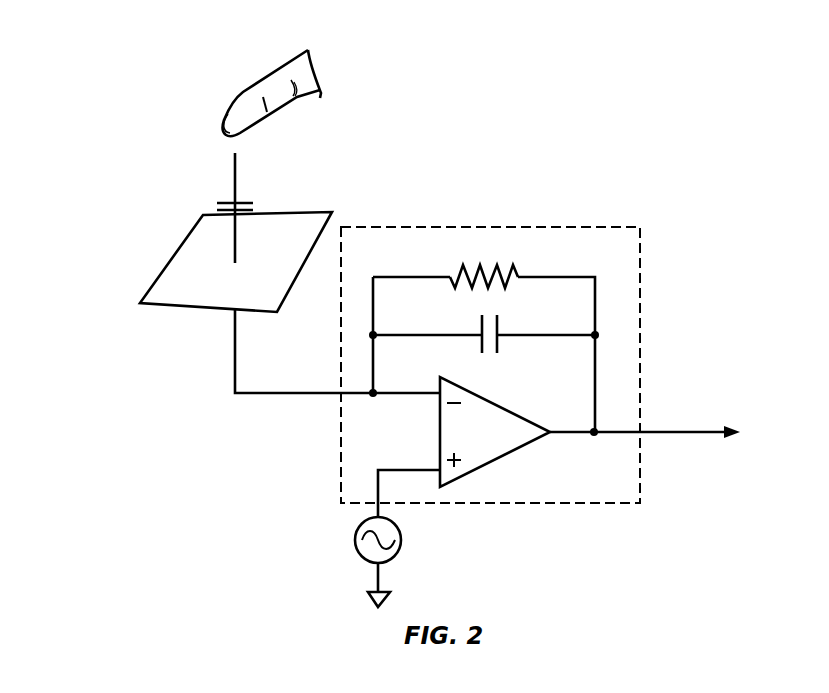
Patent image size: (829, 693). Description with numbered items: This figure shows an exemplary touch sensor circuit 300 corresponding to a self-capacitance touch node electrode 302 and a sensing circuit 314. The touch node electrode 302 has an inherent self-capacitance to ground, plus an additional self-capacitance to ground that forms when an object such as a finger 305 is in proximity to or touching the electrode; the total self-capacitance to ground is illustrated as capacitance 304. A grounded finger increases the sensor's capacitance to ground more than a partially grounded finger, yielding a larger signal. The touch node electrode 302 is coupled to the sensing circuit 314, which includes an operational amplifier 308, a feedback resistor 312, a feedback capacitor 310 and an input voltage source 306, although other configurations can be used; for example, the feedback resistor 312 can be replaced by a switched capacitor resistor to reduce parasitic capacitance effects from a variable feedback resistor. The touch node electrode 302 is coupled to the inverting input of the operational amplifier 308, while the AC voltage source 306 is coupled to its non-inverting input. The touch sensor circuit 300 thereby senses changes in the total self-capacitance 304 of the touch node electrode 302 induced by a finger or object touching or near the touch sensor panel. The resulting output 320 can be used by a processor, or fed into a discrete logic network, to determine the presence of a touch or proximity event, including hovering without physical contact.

The touch sensor circuit 300 is at (166, 2).
The touch node electrode 302 is at (162, 293).
The capacitance 304 is at (245, 202).
The finger 305 is at (278, 80).
The AC voltage source 306 is at (402, 540).
The operational amplifier 308 is at (493, 465).
The feedback capacitor 310 is at (498, 333).
The feedback resistor 312 is at (497, 263).
The sensing circuit 314 is at (583, 226).
The output 320 is at (683, 432).